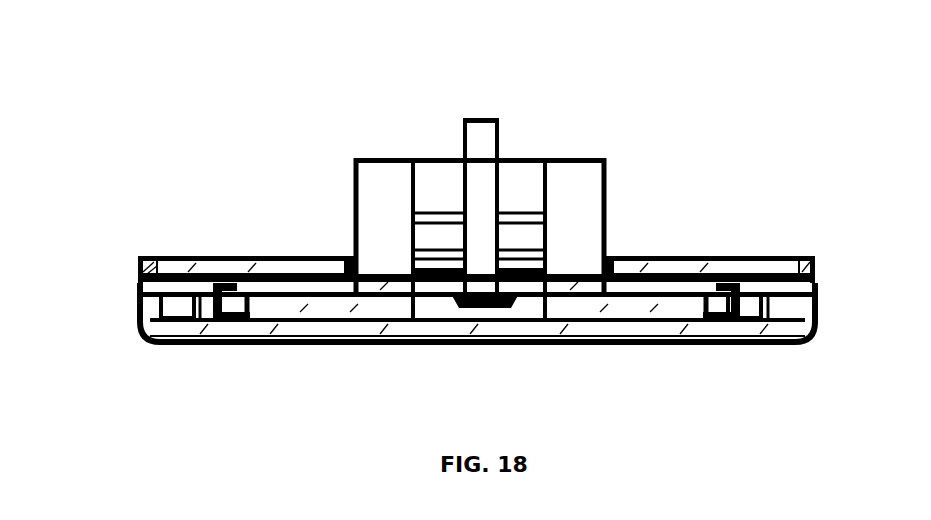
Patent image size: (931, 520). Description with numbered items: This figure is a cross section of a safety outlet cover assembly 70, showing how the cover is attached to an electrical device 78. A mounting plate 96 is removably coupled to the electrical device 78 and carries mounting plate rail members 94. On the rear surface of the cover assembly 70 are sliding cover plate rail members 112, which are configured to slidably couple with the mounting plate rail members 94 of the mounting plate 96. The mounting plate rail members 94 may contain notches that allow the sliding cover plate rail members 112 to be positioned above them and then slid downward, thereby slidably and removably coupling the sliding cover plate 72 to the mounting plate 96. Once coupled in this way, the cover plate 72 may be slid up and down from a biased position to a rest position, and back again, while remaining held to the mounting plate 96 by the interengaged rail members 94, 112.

The cover assembly 70 is at (136, 329).
The sliding cover plate 72 is at (258, 338).
The electrical device 78 is at (381, 190).
The mounting plate rail members 94 is at (706, 262).
The mounting plate 96 is at (230, 256).
The sliding cover plate rail members 112 is at (205, 333).